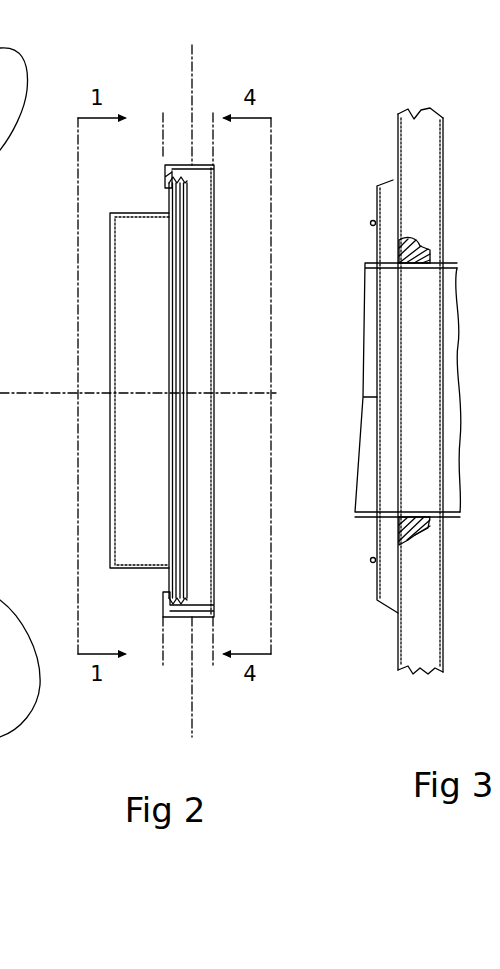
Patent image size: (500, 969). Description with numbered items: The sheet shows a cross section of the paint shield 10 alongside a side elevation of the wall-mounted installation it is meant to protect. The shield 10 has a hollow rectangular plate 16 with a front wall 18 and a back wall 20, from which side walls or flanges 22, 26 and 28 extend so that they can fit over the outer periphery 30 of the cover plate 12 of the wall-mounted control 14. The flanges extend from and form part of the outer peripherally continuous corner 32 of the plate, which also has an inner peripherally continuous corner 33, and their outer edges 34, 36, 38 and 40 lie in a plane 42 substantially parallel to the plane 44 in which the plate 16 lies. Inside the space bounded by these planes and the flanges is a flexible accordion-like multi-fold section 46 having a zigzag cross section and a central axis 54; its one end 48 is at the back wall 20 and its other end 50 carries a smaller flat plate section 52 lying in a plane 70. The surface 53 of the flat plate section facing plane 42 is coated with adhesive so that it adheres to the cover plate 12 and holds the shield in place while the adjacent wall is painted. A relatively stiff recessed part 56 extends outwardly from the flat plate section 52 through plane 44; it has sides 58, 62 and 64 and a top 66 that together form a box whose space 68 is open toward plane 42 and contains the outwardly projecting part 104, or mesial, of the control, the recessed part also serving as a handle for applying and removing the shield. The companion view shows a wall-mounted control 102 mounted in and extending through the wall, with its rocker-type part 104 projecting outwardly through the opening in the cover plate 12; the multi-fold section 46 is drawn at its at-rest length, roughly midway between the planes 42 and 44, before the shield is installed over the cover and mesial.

In FIG. 2, the paint shield 10 is at (100, 211).
In FIG. 3, the paint shield 10 is at (487, 276).
In FIG. 3, the cover plate 12 is at (374, 182).
In FIG. 3, the wall-mounted control 14 is at (363, 261).
In FIG. 2, the plate 16 is at (158, 171).
In FIG. 2, the front wall 18 is at (162, 183).
In FIG. 3, the front wall 18 is at (427, 613).
In FIG. 2, the back wall 20 is at (178, 165).
In FIG. 2, the side wall or flange 22 is at (203, 165).
In FIG. 2, the side wall or flange 26 is at (198, 617).
In FIG. 2, the side wall or flange 28 is at (194, 482).
In FIG. 3, the side wall or flange 28 is at (499, 560).
In FIG. 3, the outer periphery 30 is at (392, 180).
In FIG. 2, the outer peripherally continuous corner 32 is at (162, 173).
In FIG. 3, the outer peripherally continuous corner 32 is at (487, 416).
In FIG. 2, the inner peripherally continuous corner 33 is at (212, 612).
In FIG. 3, the inner peripherally continuous corner 33 is at (499, 595).
In FIG. 2, the outer edge 34 is at (206, 173).
In FIG. 2, the outer edge 36 is at (0, 341).
In FIG. 3, the outer edge 36 is at (487, 336).
In FIG. 2, the outer edge 38 is at (215, 637).
In FIG. 2, the outer edge 40 is at (214, 288).
In FIG. 2, the plane 42 is at (214, 142).
In FIG. 2, the plane 44 is at (163, 163).
In FIG. 2, the multi-fold section 46 is at (168, 277).
In FIG. 2, the one end 48 is at (170, 185).
In FIG. 2, the other end 50 is at (190, 190).
In FIG. 3, the other end 50 is at (487, 394).
In FIG. 2, the flat plate section 52 is at (192, 203).
In FIG. 3, the flat plate section 52 is at (449, 373).
In FIG. 2, the surface 53 is at (193, 210).
In FIG. 2, the central axis 54 is at (235, 393).
In FIG. 2, the recessed part 56 is at (110, 381).
In FIG. 3, the recessed part 56 is at (487, 441).
In FIG. 2, the side 58 is at (143, 213).
In FIG. 2, the side 62 is at (135, 565).
In FIG. 2, the side 64 is at (133, 445).
In FIG. 2, the top 66 is at (110, 441).
In FIG. 2, the space 68 is at (141, 494).
In FIG. 2, the plane 70 is at (192, 160).
In FIG. 3, the wall-mounted control 102 is at (413, 402).
In FIG. 3, the part (mesial) 104 is at (363, 466).